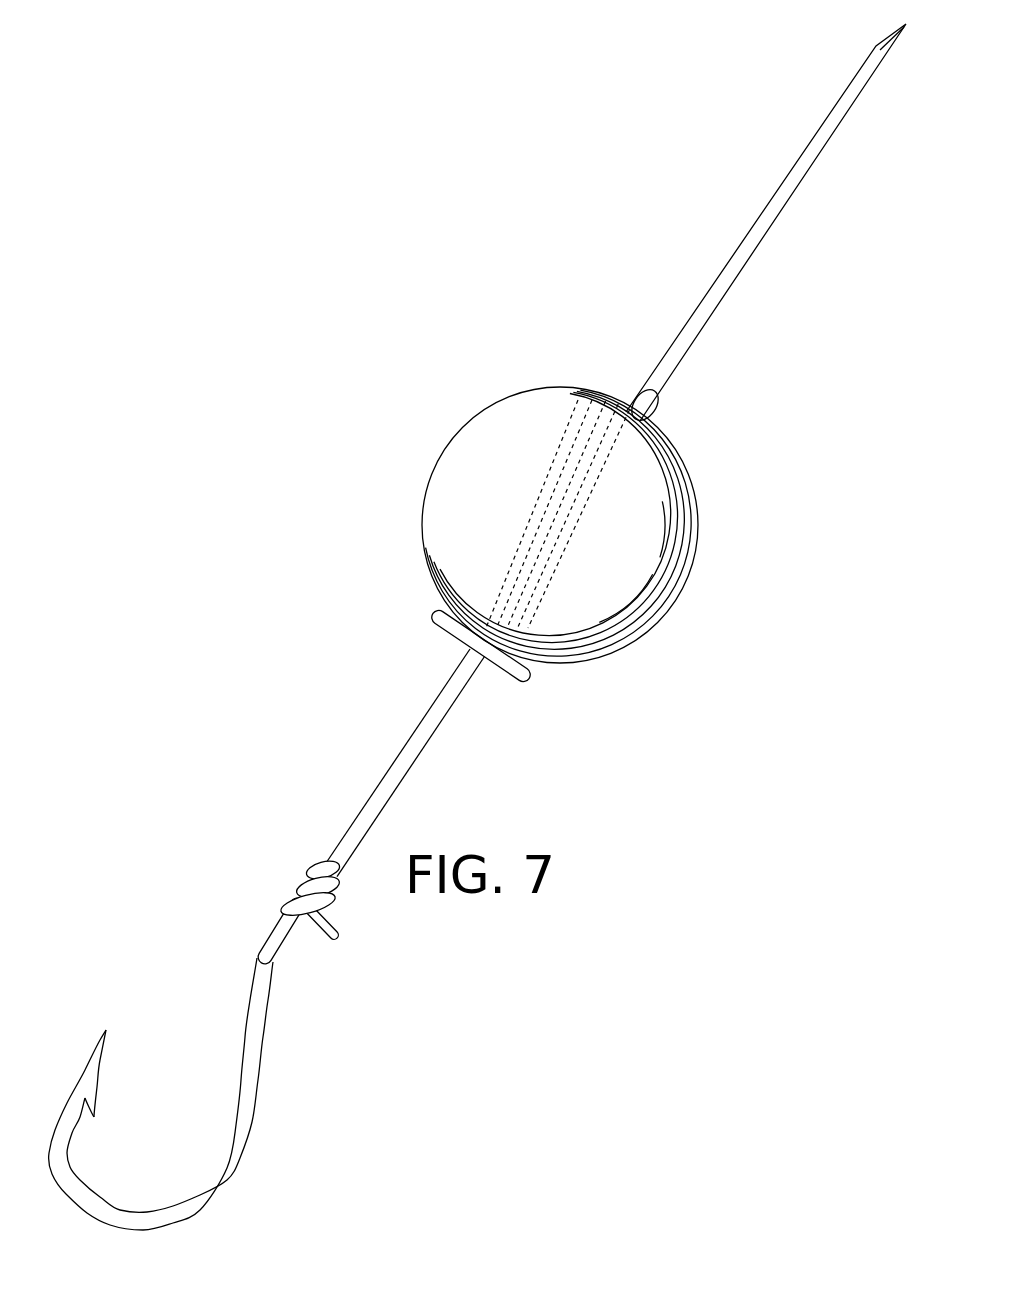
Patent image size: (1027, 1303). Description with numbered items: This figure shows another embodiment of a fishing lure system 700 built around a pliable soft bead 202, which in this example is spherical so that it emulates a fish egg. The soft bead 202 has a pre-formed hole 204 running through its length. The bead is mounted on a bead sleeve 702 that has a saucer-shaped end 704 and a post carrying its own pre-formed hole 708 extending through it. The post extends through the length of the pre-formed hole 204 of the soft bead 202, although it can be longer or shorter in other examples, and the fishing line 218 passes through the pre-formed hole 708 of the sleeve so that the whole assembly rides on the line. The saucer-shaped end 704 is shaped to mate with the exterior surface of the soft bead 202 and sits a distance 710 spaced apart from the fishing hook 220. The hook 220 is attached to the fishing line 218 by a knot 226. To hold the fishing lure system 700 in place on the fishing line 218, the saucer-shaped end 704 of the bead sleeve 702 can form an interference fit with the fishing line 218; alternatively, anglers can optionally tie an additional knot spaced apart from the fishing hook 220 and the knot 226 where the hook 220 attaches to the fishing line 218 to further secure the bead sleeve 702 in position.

The fishing lure system 700 is at (445, 380).
The soft bead 202 is at (700, 521).
The pre-formed hole 204 is at (574, 538).
The fishing line 218 is at (782, 211).
The hook 220 is at (258, 1108).
The knot 226 is at (285, 892).
The bead sleeve 702 is at (584, 449).
The saucer-shaped end 704 is at (498, 665).
The pre-formed hole 708 is at (556, 493).
The distance 710 is at (445, 639).